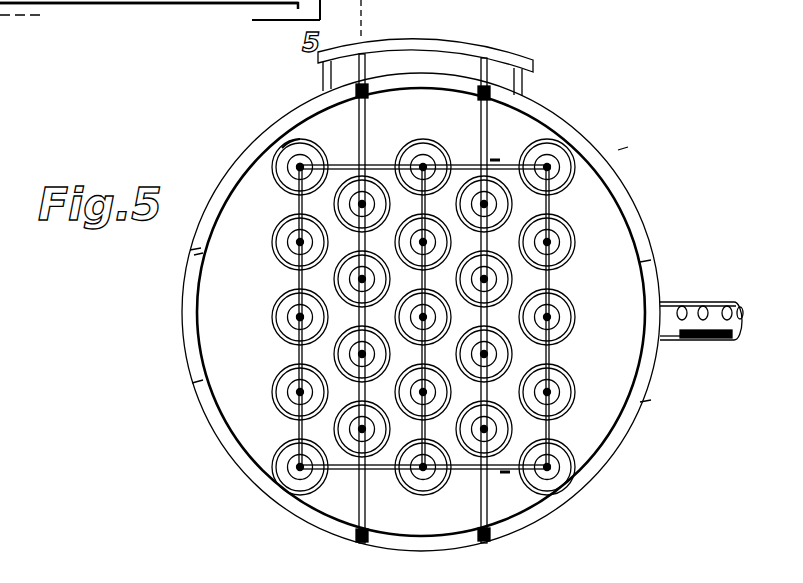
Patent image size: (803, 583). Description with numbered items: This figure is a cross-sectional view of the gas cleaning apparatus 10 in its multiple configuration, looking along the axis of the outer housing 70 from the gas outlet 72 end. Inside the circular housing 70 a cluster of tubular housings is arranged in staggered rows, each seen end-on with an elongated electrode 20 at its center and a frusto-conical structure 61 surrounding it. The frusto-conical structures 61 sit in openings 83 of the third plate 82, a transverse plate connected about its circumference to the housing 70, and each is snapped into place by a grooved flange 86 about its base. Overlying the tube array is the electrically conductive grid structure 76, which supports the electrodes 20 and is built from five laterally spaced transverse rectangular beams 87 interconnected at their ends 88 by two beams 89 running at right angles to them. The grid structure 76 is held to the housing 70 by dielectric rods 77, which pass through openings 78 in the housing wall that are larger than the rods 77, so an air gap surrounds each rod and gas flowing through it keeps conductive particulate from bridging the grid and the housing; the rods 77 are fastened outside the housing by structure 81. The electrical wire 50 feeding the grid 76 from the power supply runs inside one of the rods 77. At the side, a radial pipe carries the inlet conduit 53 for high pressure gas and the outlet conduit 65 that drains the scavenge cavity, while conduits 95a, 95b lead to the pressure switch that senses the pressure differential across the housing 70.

The gas cleaning apparatus 10 is at (419, 278).
The elongated electrode 20 is at (303, 164).
The electrical wire 50 is at (362, 36).
The inlet conduit 53 is at (712, 341).
The frusto-conical structure 61 is at (290, 232).
The outlet conduit 65 is at (688, 341).
The housing 70 is at (377, 280).
The gas outlet 72 is at (130, 10).
The grid structure 76 is at (552, 206).
The dielectric rod 77 is at (366, 141).
The opening 78 is at (535, 541).
The structure 81 is at (420, 39).
The third plate 82 is at (206, 374).
The opening 83 is at (288, 148).
The grooved flange 86 is at (293, 446).
The transverse rectangular beam 87 is at (548, 426).
The end 88 is at (446, 172).
The beam 89 is at (497, 165).
The conduit 95a is at (733, 305).
The conduit 95b is at (669, 304).